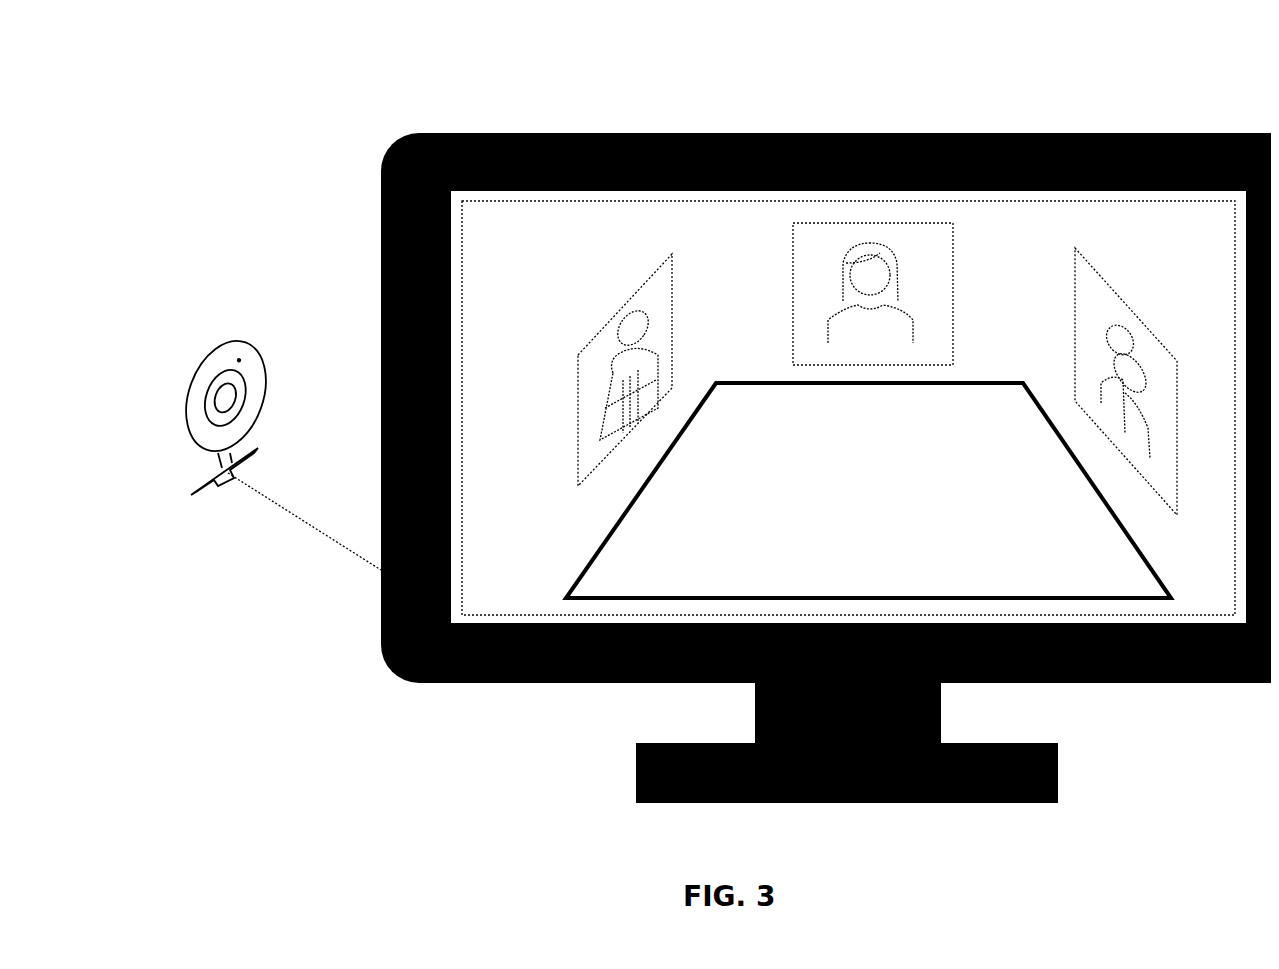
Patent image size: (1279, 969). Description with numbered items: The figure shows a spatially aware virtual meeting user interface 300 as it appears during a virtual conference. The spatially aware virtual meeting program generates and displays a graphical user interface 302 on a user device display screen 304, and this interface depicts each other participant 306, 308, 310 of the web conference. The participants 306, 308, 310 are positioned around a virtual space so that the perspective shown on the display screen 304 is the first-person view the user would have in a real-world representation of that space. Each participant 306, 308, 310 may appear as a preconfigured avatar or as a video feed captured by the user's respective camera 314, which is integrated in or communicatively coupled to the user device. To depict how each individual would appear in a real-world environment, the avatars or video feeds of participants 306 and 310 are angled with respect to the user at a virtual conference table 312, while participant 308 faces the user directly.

The spatially aware virtual meeting user interface 300 is at (258, 68).
The graphical user interface 302 is at (455, 545).
The user device display screen 304 is at (562, 125).
The participant 306 is at (663, 285).
The participant 308 is at (946, 243).
The participant 310 is at (1090, 265).
The virtual conference table 312 is at (1138, 550).
The camera 314 is at (233, 328).